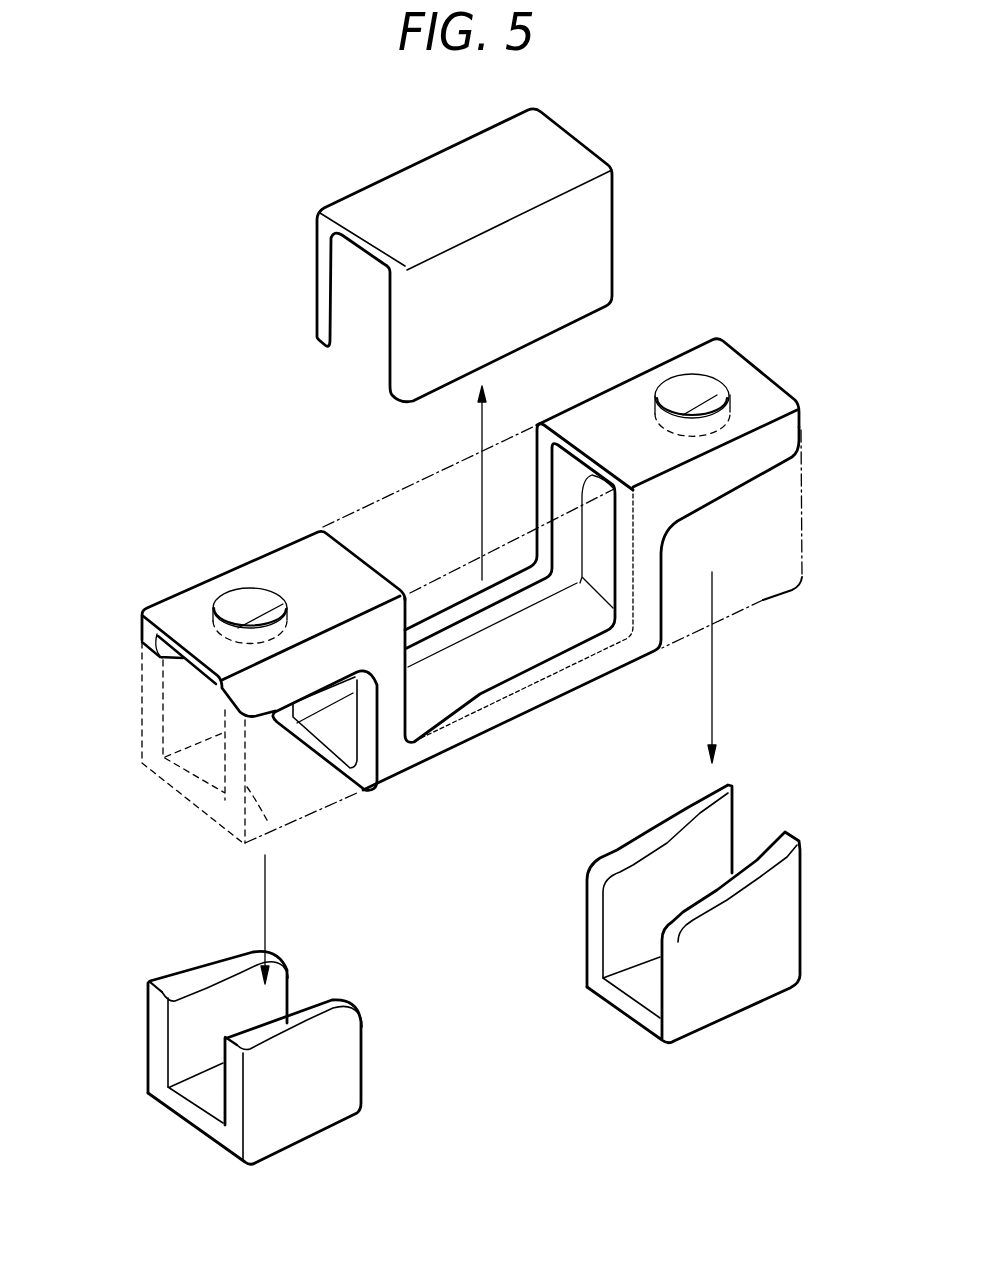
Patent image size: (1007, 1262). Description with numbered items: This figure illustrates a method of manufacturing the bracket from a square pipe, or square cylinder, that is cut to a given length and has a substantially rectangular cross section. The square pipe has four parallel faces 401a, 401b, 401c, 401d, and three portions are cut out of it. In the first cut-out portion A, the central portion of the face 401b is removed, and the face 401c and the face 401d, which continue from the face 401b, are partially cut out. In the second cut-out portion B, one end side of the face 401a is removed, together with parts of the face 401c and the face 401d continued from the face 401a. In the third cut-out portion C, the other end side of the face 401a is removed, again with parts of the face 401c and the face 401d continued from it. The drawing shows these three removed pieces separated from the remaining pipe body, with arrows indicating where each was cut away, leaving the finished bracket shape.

The face 401a is at (197, 810).
The face 401b is at (198, 633).
The face 401c is at (137, 723).
The face 401d is at (270, 822).
The cut-out portion A is at (565, 150).
The cut-out portion B is at (287, 1130).
The cut-out portion C is at (747, 988).